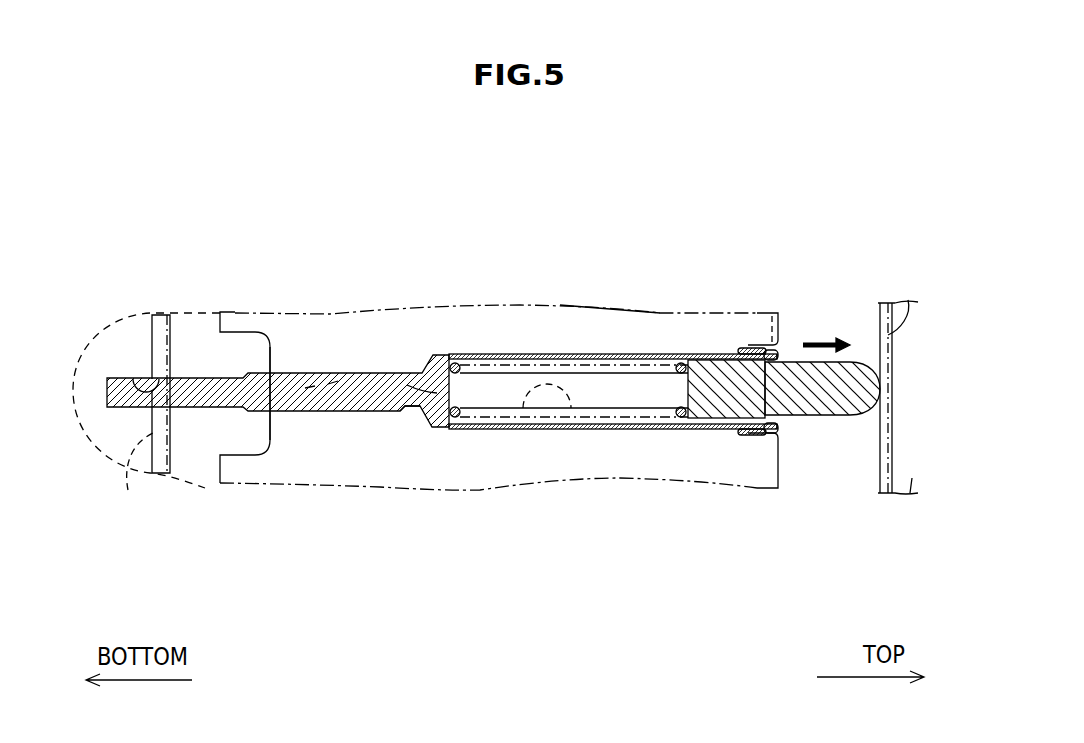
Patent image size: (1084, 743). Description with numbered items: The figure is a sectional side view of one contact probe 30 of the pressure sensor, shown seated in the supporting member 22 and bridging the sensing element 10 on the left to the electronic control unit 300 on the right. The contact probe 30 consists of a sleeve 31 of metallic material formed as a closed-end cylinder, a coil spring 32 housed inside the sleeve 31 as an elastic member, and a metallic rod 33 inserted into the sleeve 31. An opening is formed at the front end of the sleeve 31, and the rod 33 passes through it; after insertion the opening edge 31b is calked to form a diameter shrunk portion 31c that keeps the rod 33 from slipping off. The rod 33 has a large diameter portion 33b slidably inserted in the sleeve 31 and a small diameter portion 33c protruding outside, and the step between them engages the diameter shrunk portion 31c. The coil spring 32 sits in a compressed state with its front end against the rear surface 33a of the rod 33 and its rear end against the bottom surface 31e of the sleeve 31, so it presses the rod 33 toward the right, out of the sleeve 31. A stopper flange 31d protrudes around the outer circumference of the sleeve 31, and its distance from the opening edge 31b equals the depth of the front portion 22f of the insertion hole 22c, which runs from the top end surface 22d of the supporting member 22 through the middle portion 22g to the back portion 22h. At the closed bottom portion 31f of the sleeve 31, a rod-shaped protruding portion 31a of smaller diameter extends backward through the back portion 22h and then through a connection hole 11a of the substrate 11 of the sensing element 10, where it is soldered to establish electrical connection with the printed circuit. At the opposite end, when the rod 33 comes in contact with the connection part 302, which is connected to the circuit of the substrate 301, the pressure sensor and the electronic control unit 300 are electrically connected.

The sensing element 10 is at (179, 473).
The substrate 11 is at (133, 472).
The connection hole 11a is at (126, 378).
The supporting member 22 is at (233, 310).
The insertion hole 22c is at (488, 397).
The top end surface 22d is at (780, 343).
The front portion 22f is at (770, 318).
The middle portion 22g is at (617, 350).
The back portion 22h is at (300, 373).
The contact probe 30 is at (493, 393).
The sleeve 31 is at (547, 353).
The protruding portion 31a is at (322, 413).
The opening edge 31b is at (780, 353).
The diameter shrunk portion 31c is at (778, 427).
The stopper flange 31d is at (760, 350).
The bottom surface 31e is at (452, 390).
The bottom portion 31f is at (404, 411).
The coil spring 32 is at (566, 423).
The rod 33 is at (747, 466).
The rear surface 33a is at (680, 417).
The large diameter portion 33b is at (722, 400).
The small diameter portion 33c is at (845, 416).
The electronic control unit 300 is at (906, 408).
The substrate 301 is at (903, 500).
The connection part 302 is at (907, 300).